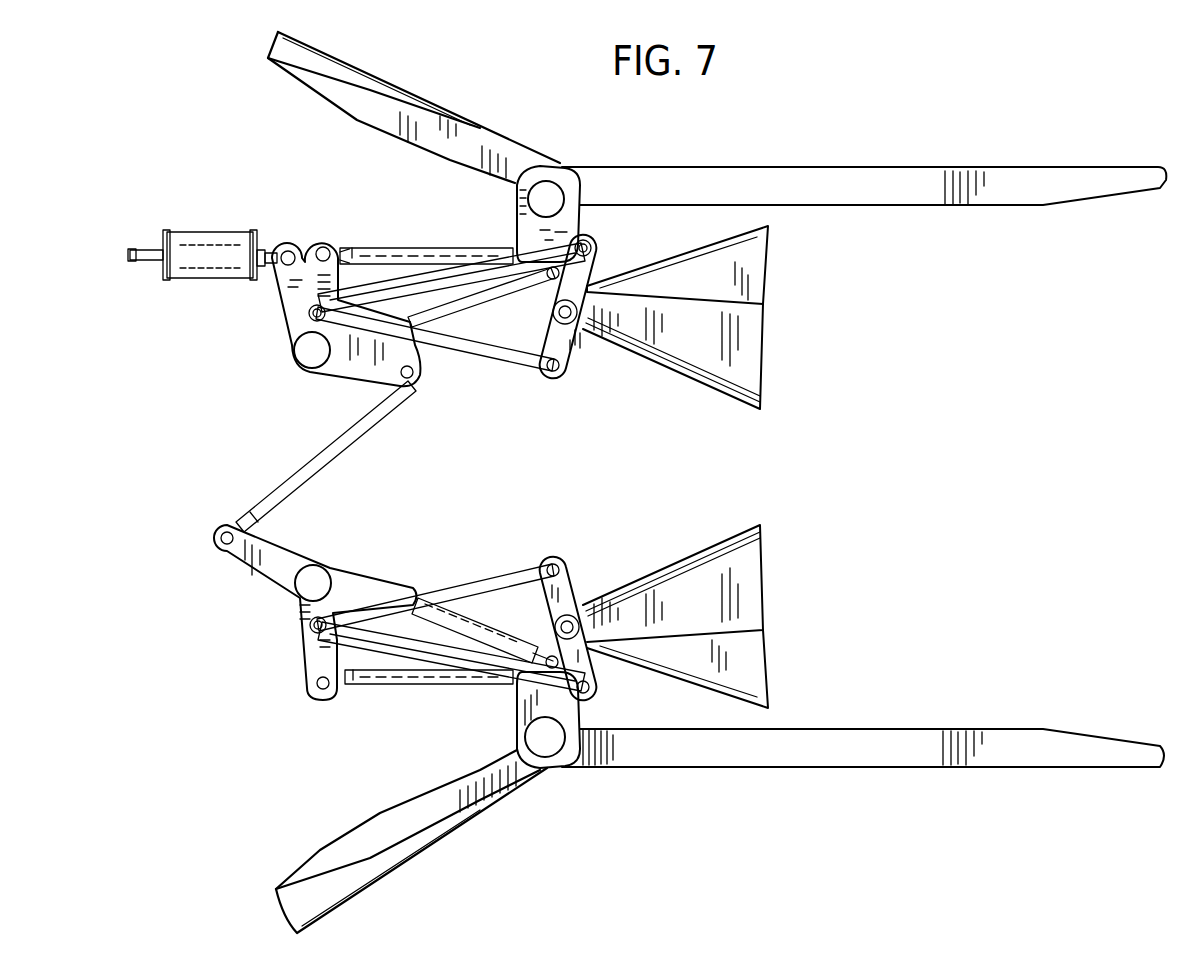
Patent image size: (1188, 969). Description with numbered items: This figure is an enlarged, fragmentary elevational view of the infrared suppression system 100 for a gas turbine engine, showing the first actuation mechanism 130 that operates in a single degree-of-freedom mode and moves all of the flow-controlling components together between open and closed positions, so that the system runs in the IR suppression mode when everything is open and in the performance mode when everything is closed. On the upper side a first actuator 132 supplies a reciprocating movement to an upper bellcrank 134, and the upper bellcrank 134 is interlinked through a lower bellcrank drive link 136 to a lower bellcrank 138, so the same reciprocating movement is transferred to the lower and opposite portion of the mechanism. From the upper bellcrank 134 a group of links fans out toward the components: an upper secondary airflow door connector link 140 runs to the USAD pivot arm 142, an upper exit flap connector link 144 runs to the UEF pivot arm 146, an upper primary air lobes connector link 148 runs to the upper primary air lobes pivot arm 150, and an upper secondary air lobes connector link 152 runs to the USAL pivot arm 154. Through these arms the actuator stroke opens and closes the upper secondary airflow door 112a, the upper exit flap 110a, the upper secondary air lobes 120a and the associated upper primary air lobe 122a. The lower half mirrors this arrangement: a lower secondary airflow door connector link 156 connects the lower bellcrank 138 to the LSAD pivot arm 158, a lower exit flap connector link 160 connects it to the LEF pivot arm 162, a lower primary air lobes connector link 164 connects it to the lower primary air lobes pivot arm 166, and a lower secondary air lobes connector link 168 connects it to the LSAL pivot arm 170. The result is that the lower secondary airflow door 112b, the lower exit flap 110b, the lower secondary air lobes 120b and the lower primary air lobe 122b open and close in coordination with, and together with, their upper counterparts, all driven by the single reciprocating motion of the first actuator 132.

The IR suppression system 100 is at (985, 88).
The upper exit flap 110a is at (862, 166).
The lower exit flap 110b is at (880, 768).
The upper secondary airflow door 112a is at (337, 53).
The lower secondary airflow door 112b is at (377, 893).
The upper secondary air lobes 120a is at (712, 400).
The lower secondary air lobes 120b is at (733, 520).
The upper primary air lobe 122a is at (768, 248).
The lower primary air lobe 122b is at (767, 667).
The first actuation mechanism 130 is at (187, 410).
The first actuator 132 is at (190, 280).
The upper bellcrank 134 is at (238, 326).
The lower bellcrank drive link 136 is at (297, 477).
The lower bellcrank 138 is at (247, 593).
The upper secondary airflow door connector link 140 is at (473, 300).
The USAD pivot arm 142 is at (505, 268).
The upper exit flap connector link 144 is at (383, 296).
The UEF pivot arm 146 is at (583, 212).
The upper primary air lobes connector link 148 is at (376, 285).
The upper primary air lobes pivot arm 150 is at (593, 244).
The upper secondary air lobes connector link 152 is at (457, 347).
The USAL pivot arm 154 is at (573, 350).
The lower secondary airflow door connector link 156 is at (367, 687).
The LSAD pivot arm 158 is at (510, 693).
The lower exit flap connector link 160 is at (483, 630).
The LEF pivot arm 162 is at (577, 710).
The lower primary air lobes connector link 164 is at (490, 605).
The lower primary air lobes pivot arm 166 is at (610, 682).
The lower secondary air lobes connector link 168 is at (450, 590).
The LSAL pivot arm 170 is at (573, 587).